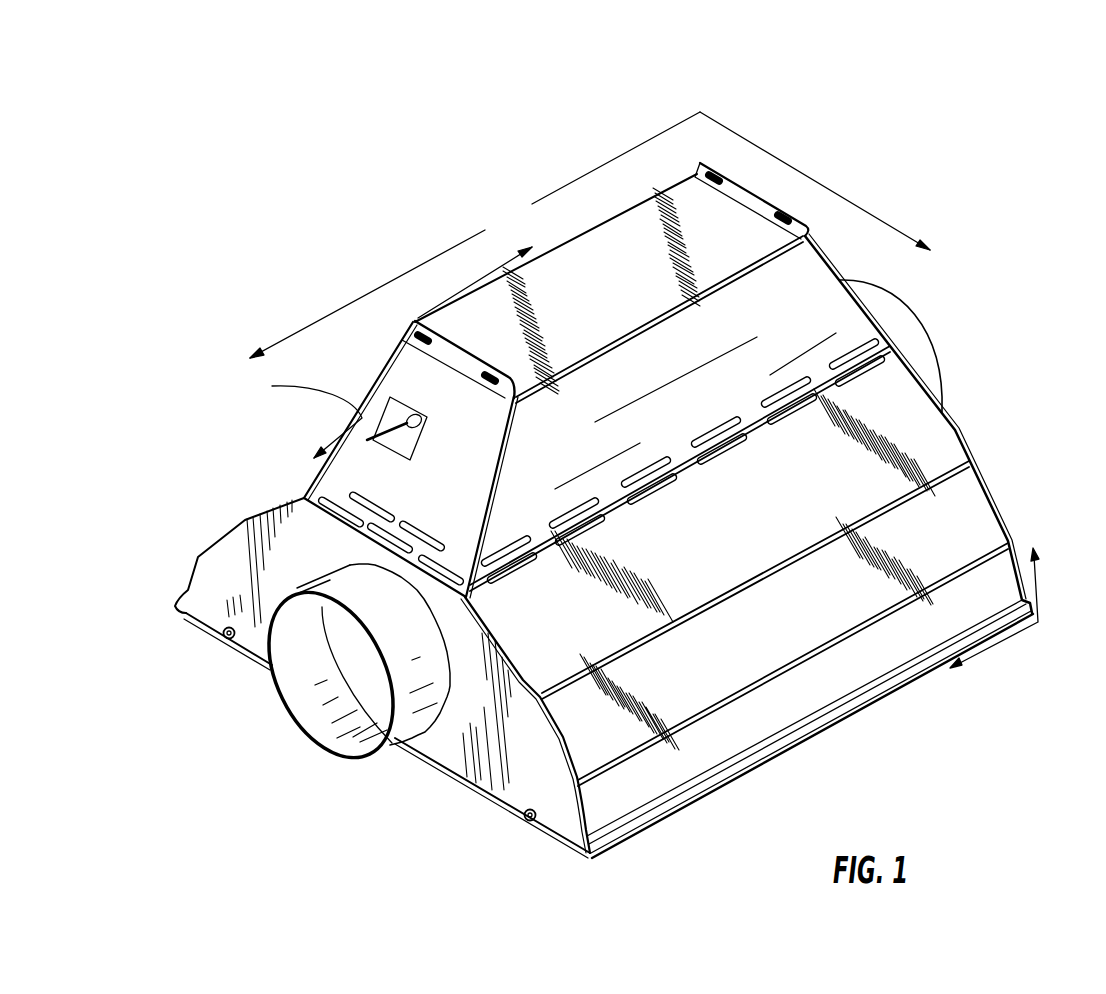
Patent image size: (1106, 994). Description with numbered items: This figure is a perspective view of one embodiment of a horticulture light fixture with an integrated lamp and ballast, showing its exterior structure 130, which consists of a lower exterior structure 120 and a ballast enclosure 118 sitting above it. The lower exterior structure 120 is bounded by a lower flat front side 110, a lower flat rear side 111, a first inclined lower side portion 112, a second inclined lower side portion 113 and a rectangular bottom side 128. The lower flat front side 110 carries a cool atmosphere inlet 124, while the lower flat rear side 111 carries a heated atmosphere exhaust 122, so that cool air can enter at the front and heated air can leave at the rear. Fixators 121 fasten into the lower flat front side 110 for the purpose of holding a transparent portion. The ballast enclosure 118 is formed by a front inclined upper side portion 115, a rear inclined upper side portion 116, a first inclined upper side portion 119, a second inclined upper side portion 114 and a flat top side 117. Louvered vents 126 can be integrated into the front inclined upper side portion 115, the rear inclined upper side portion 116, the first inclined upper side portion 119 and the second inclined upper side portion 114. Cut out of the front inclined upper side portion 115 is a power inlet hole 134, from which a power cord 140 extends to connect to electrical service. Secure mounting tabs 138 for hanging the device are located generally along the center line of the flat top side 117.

The lower flat front side 110 is at (544, 762).
The lower flat rear side 111 is at (958, 430).
The first inclined lower side portion 112 is at (760, 535).
The second inclined lower side portion 113 is at (275, 500).
The second inclined upper side portion 114 is at (639, 188).
The front inclined upper side portion 115 is at (411, 460).
The rear inclined upper side portion 116 is at (822, 254).
The flat top side 117 is at (620, 288).
The ballast enclosure 118 is at (411, 318).
The first inclined upper side portion 119 is at (674, 359).
The lower exterior structure 120 is at (1015, 608).
The fixators 121 is at (228, 639).
The heated atmosphere exhaust 122 is at (876, 317).
The cool atmosphere inlet 124 is at (303, 678).
The louvered vents 126 is at (876, 346).
The rectangular bottom side 128 is at (840, 738).
The exterior structure 130 is at (475, 235).
The power inlet hole 134 is at (392, 398).
The secure mounting tabs 138 is at (703, 177).
The power cord 140 is at (300, 415).